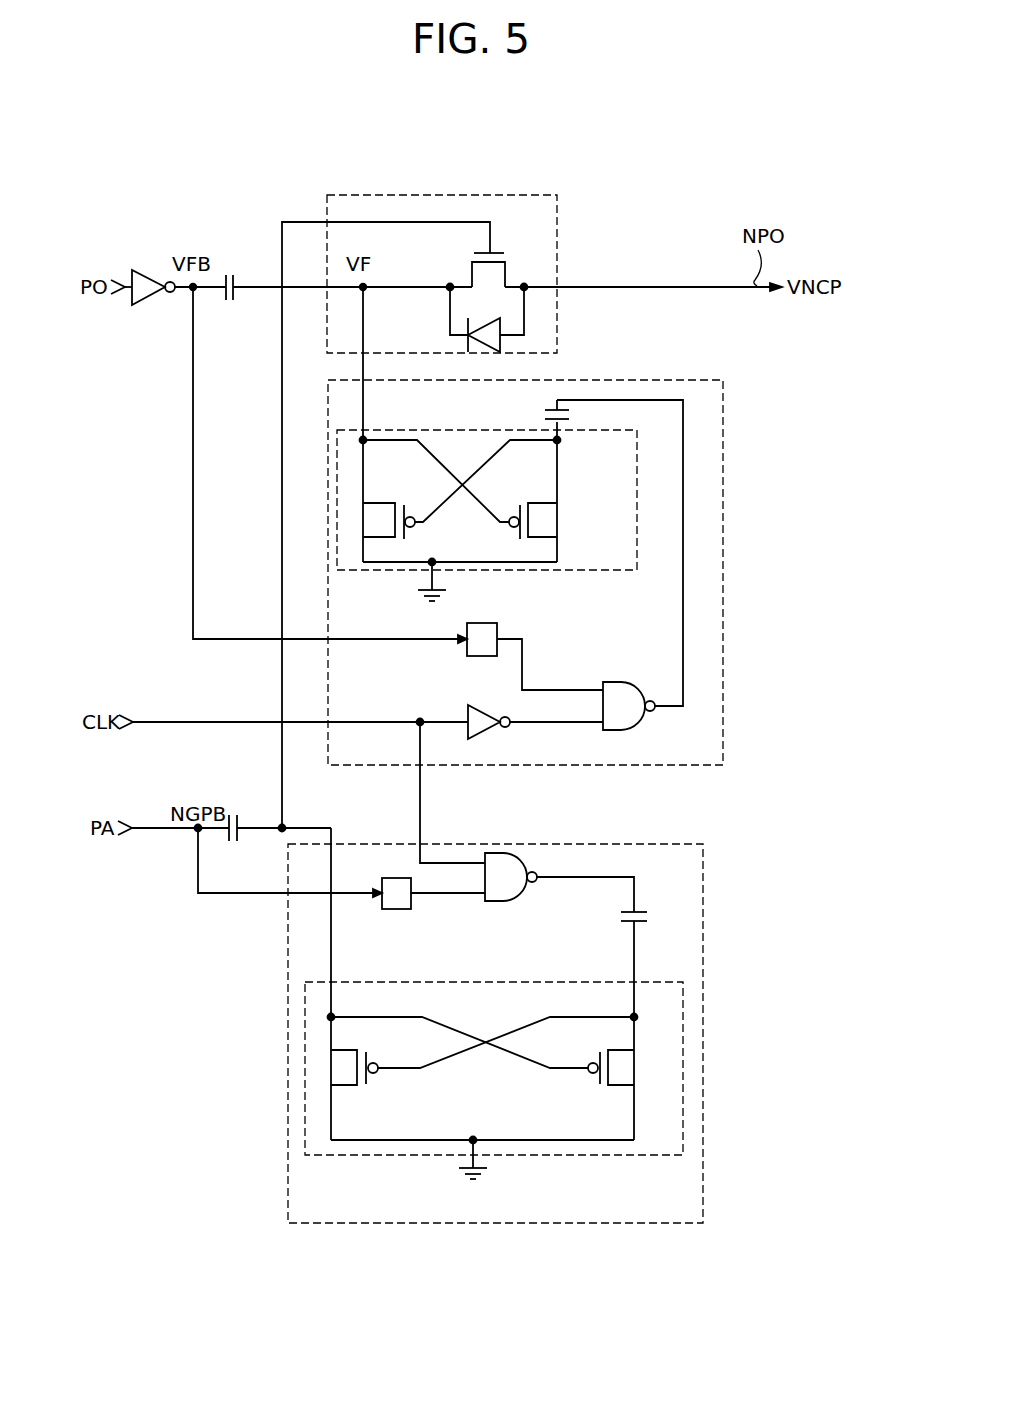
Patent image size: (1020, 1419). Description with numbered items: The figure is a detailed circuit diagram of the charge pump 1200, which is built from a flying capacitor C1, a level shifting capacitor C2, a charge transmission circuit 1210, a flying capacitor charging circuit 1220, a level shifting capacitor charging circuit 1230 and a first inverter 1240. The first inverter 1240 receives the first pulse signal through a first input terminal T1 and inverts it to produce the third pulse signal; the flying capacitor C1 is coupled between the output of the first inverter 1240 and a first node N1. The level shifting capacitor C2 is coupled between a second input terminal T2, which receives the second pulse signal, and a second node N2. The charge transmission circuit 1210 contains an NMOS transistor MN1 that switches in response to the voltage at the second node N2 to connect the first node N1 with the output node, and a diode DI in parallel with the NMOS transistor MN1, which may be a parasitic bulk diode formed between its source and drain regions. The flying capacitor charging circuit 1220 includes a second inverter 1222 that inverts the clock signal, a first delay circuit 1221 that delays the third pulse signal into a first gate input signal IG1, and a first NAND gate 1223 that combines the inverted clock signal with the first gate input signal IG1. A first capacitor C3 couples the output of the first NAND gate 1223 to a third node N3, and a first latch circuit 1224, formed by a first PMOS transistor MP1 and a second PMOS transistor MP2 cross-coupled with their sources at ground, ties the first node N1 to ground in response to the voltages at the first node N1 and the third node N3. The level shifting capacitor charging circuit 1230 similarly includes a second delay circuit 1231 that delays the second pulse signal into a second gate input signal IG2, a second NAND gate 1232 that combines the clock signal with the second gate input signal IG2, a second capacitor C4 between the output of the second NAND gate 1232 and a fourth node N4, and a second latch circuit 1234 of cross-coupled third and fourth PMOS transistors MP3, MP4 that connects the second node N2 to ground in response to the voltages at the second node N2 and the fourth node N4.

The charge pump 1200 is at (473, 135).
The first inverter 1240 is at (147, 268).
The charge transmission circuit 1210 is at (558, 200).
The flying capacitor charging circuit 1220 is at (723, 603).
The first latch circuit 1224 is at (637, 515).
The first delay circuit 1221 is at (483, 622).
The first NAND gate 1223 is at (611, 680).
The second inverter 1222 is at (480, 740).
The level shifting capacitor charging circuit 1230 is at (703, 1032).
The second delay circuit 1231 is at (396, 911).
The second NAND gate 1232 is at (500, 903).
The second latch circuit 1234 is at (610, 1157).
The flying capacitor C1 is at (234, 276).
The level shifting capacitor C2 is at (238, 818).
The first capacitor C3 is at (575, 413).
The second capacitor C4 is at (656, 919).
The NMOS transistor MN1 is at (516, 269).
The diode DI is at (487, 318).
The first PMOS transistor MP1 is at (380, 521).
The second PMOS transistor MP2 is at (557, 521).
The third PMOS transistor MP3 is at (345, 1067).
The fourth PMOS transistor MP4 is at (631, 1067).
The first gate input signal IG1 is at (548, 675).
The second gate input signal IG2 is at (445, 883).
The first node N1 is at (361, 287).
The second node N2 is at (286, 827).
The third node N3 is at (560, 445).
The fourth node N4 is at (632, 1015).
The first input terminal T1 is at (121, 296).
The second input terminal T2 is at (160, 835).